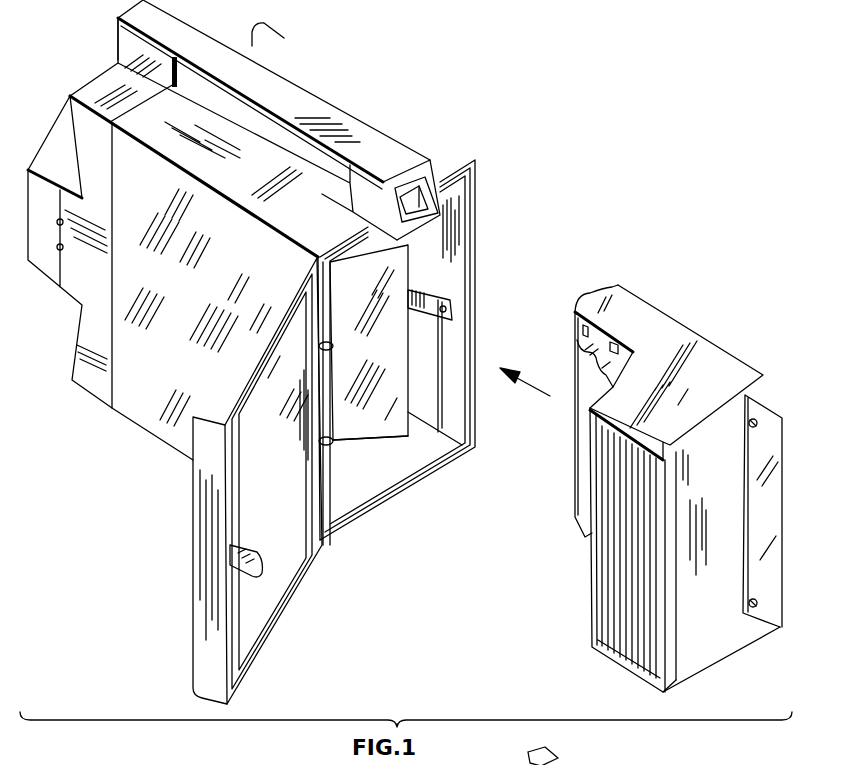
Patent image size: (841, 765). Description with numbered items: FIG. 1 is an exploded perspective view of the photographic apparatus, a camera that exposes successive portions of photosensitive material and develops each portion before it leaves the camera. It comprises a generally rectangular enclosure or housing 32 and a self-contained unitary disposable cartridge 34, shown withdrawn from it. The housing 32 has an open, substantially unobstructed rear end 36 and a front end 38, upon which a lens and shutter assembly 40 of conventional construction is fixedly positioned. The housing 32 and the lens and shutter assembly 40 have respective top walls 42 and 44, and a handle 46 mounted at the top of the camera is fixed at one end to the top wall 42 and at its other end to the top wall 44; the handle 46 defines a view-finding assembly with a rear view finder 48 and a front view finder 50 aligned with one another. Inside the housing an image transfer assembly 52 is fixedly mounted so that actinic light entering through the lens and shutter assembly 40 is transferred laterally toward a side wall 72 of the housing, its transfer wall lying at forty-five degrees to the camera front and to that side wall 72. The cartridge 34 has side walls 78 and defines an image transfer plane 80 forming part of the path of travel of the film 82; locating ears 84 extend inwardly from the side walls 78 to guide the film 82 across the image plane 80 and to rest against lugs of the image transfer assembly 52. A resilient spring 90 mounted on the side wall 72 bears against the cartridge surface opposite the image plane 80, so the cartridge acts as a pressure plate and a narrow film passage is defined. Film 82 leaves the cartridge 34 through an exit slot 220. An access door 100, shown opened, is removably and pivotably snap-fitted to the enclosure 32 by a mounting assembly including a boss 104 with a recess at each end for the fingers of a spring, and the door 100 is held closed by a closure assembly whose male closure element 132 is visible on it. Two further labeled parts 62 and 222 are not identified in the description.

The housing 32 is at (375, 96).
The self-contained unitary disposable cartridge 34 is at (694, 310).
The rear end 36 is at (470, 233).
The front end 38 is at (136, 112).
The lens and shutter assembly 40 is at (70, 354).
The top wall 42 is at (313, 62).
The top wall 44 is at (247, 26).
The handle 46 is at (272, 104).
The rear view finder 48 is at (413, 193).
The front view finder 50 is at (120, 38).
The image transfer assembly 52 is at (374, 443).
The fastener 62 is at (557, 757).
The side wall 72 is at (434, 337).
The side walls 78 is at (664, 356).
The image transfer plane 80 is at (582, 345).
The photosensitive material or film 82 is at (575, 442).
The locating ears 84 is at (620, 348).
The resilient element or spring 90 is at (455, 307).
The access door 100 is at (187, 574).
The boss 104 is at (330, 385).
The male closure element 132 is at (253, 547).
The exit slot 220 is at (747, 393).
The screw holes 222 is at (757, 420).